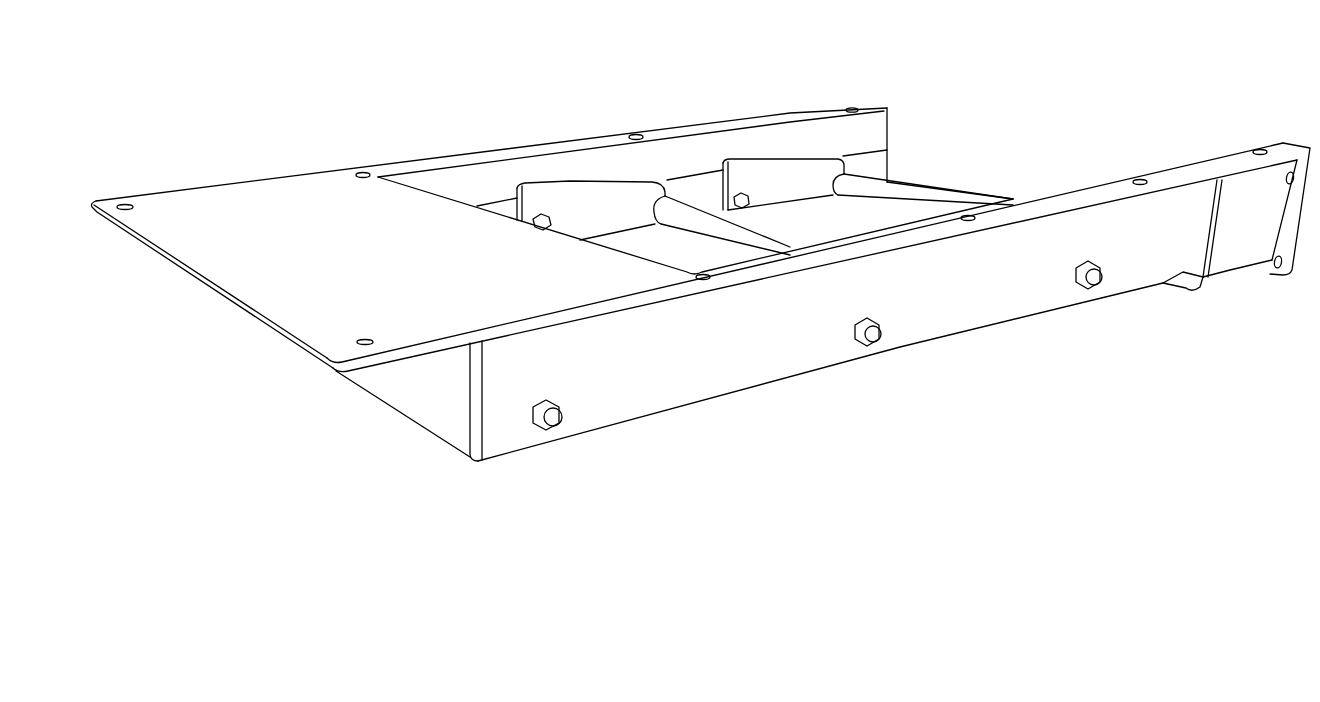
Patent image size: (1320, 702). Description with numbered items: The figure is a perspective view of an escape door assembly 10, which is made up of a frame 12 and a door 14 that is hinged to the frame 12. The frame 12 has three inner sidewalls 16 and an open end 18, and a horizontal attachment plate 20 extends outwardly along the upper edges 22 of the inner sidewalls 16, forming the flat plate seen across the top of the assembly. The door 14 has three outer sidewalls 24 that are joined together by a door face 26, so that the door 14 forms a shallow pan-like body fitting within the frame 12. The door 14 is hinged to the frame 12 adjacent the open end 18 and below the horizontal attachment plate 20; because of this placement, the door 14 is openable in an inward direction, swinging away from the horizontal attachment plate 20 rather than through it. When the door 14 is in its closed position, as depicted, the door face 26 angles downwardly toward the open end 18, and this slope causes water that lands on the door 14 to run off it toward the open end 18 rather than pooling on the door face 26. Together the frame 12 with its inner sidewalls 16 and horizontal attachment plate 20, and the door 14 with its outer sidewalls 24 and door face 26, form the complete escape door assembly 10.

The escape door assembly 10 is at (313, 74).
The frame 12 is at (788, 112).
The door 14 is at (793, 380).
The inner sidewalls 16 is at (445, 185).
The open end 18 is at (980, 194).
The horizontal attachment plate 20 is at (697, 133).
The upper edges 22 is at (600, 148).
The outer sidewalls 24 is at (423, 410).
The door face 26 is at (863, 217).